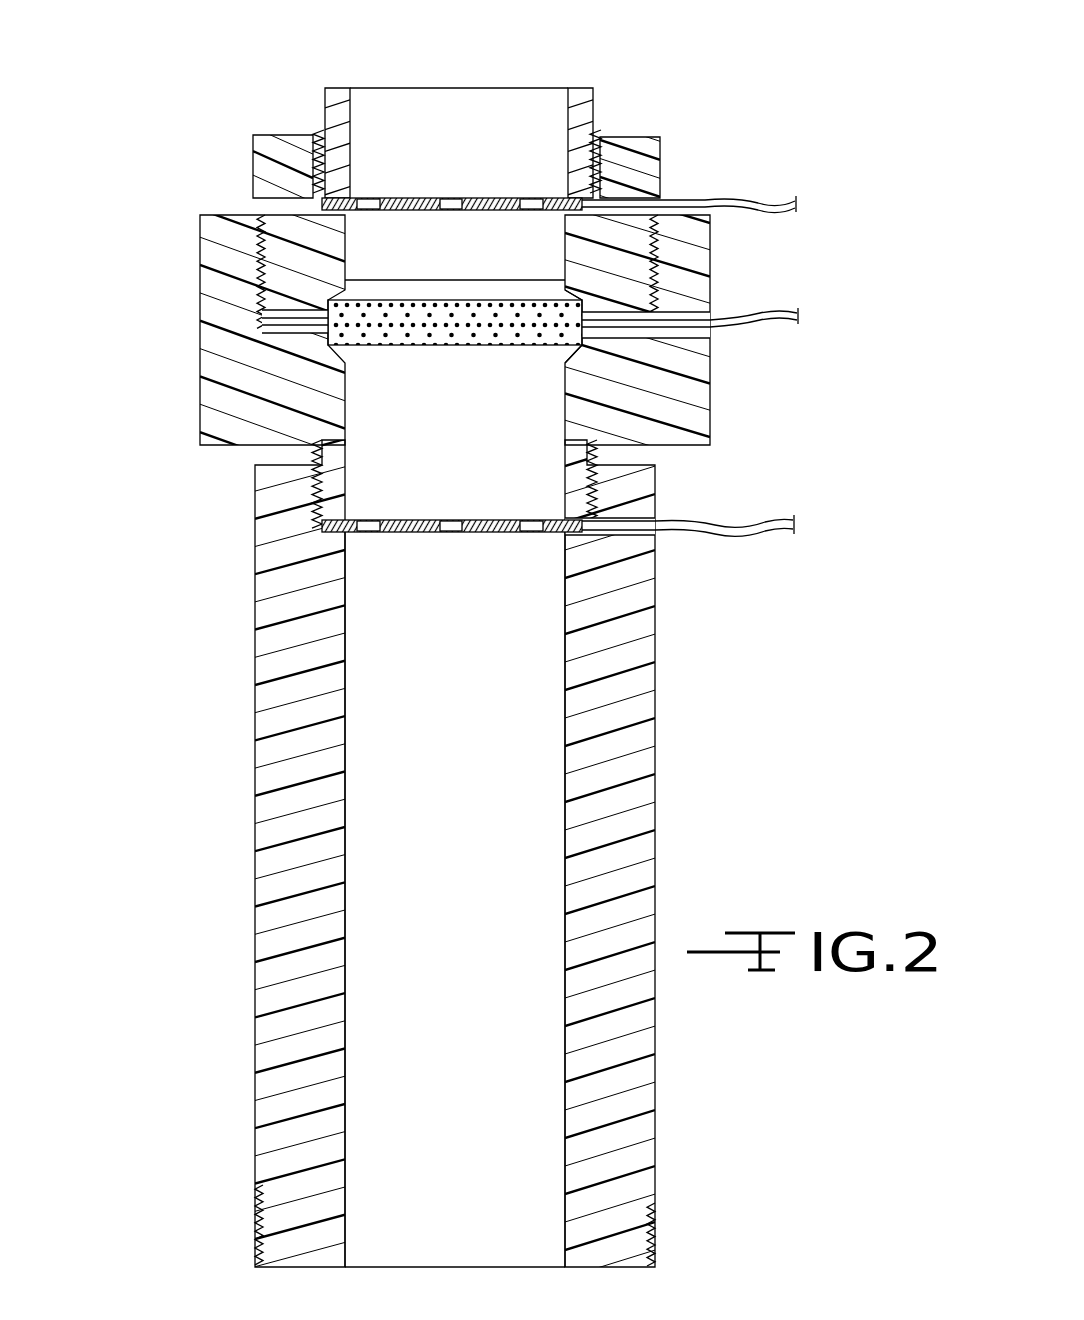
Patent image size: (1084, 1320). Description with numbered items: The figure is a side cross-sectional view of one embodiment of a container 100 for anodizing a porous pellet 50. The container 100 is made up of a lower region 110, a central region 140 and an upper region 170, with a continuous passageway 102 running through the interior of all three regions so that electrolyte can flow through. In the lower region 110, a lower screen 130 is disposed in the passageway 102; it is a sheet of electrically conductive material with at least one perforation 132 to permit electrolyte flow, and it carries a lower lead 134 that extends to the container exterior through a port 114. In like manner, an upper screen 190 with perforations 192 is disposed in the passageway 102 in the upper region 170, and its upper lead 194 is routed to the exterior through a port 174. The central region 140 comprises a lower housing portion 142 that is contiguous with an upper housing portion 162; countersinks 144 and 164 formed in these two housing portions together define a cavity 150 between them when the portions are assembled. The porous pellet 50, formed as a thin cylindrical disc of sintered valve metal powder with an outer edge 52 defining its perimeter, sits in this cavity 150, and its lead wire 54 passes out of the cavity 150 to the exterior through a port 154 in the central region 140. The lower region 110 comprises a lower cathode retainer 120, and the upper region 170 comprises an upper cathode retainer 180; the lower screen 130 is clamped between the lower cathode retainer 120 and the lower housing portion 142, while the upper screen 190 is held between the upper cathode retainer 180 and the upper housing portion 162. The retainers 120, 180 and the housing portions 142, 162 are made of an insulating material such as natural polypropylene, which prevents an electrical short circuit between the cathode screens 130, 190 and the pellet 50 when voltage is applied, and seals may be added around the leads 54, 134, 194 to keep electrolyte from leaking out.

The container 100 is at (690, 72).
The lower region 110 is at (205, 940).
The lower cathode retainer 120 is at (255, 765).
The lower screen 130 is at (440, 536).
The perforation 132 is at (526, 520).
The lower lead 134 is at (770, 532).
The central region 140 is at (163, 397).
The lower housing portion 142 is at (712, 403).
The countersink 144 is at (572, 350).
The cavity 150 is at (326, 322).
The port 154 is at (688, 322).
The upper housing portion 162 is at (253, 176).
The countersink 164 is at (560, 294).
The upper region 170 is at (222, 152).
The port 174 is at (638, 190).
The upper cathode retainer 180 is at (326, 98).
The upper screen 190 is at (412, 196).
The perforations 192 is at (523, 213).
The upper lead 194 is at (772, 206).
The porous pellet 50 is at (423, 345).
The outer edge 52 is at (258, 322).
The lead wire 54 is at (770, 326).
The passageway 102 is at (483, 166).
The port 114 is at (600, 521).